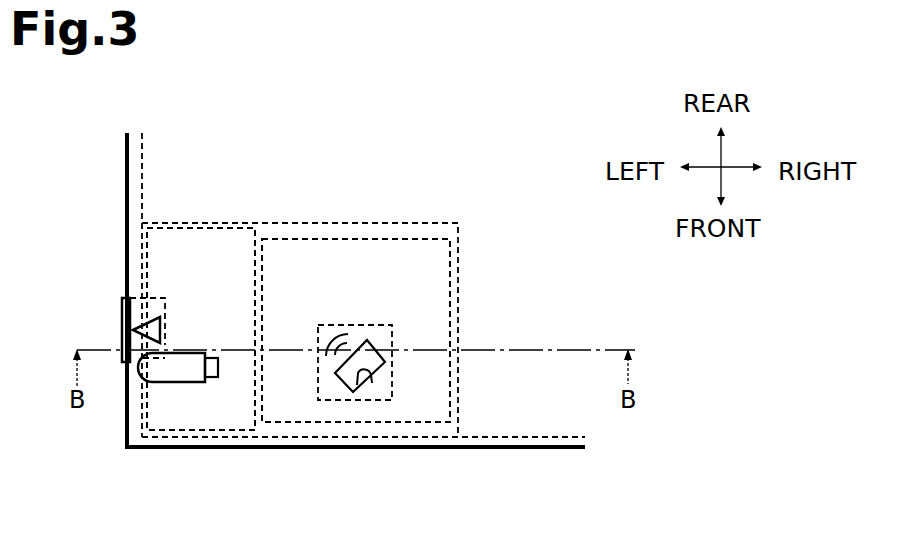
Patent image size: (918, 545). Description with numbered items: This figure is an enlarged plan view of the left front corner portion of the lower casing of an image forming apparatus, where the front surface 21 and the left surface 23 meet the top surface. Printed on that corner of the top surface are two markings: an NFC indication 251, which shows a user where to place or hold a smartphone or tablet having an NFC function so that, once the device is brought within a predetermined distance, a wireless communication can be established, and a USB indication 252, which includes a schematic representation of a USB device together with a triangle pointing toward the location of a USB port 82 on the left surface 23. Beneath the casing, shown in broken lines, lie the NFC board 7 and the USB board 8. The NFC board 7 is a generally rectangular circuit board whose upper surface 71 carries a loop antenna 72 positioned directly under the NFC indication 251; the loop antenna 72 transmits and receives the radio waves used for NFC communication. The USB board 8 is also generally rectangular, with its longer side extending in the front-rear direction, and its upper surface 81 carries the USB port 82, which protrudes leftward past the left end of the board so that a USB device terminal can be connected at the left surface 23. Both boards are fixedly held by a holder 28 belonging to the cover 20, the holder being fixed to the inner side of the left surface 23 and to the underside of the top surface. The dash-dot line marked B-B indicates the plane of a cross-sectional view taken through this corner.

The NFC board 7 is at (414, 235).
The USB board 8 is at (214, 225).
The cover 20 is at (520, 455).
The front surface 21 is at (473, 449).
The left surface 23 is at (126, 165).
The holder 28 is at (282, 230).
The upper surface 71 is at (352, 257).
The loop antenna 72 is at (377, 401).
The upper surface 81 is at (177, 245).
The USB port 82 is at (122, 307).
The NFC indication 251 is at (341, 392).
The USB indication 252 is at (178, 389).